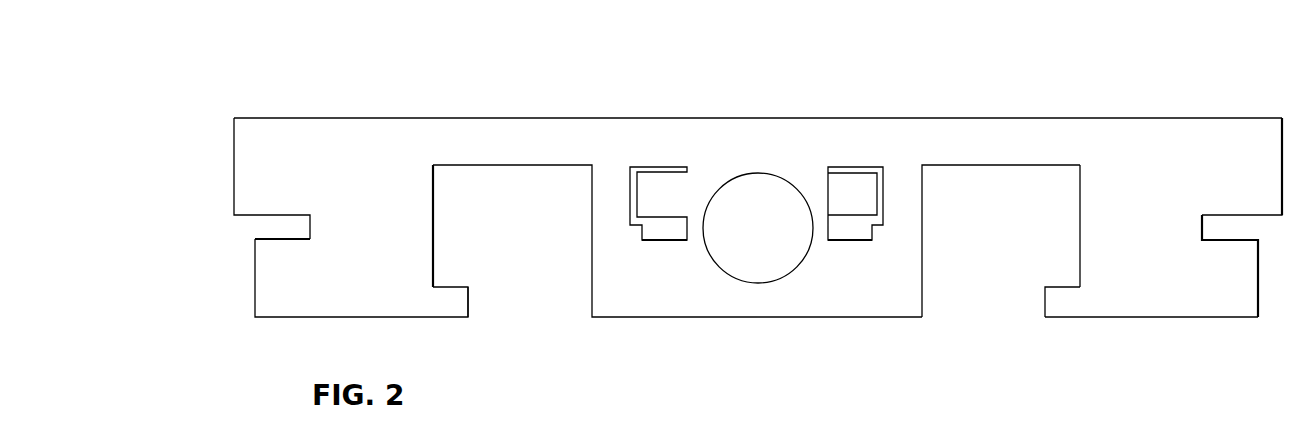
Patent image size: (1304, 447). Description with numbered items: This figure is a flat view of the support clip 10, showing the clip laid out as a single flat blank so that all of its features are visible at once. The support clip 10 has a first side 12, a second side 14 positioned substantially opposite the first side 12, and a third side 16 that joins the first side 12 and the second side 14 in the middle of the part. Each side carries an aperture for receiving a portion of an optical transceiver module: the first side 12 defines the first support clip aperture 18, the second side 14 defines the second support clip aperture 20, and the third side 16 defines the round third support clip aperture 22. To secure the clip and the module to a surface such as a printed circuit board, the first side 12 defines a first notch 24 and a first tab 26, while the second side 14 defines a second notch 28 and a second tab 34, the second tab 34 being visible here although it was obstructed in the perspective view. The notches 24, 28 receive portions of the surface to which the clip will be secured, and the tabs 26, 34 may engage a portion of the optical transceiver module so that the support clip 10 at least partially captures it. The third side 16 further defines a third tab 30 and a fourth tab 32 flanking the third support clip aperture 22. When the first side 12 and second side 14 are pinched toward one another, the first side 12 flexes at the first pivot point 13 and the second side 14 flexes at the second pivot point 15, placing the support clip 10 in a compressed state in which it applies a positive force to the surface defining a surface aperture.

The support clip 10 is at (1207, 90).
The first side 12 is at (339, 178).
The first pivot point 13 is at (502, 153).
The second side 14 is at (1142, 170).
The second pivot point 15 is at (977, 152).
The third side 16 is at (732, 153).
The first support clip aperture 18 is at (532, 248).
The second support clip aperture 20 is at (1032, 230).
The third support clip aperture 22 is at (752, 208).
The first notch 24 is at (265, 232).
The first tab 26 is at (454, 285).
The second notch 28 is at (1236, 222).
The third tab 30 is at (652, 200).
The fourth tab 32 is at (834, 200).
The second tab 34 is at (1067, 283).